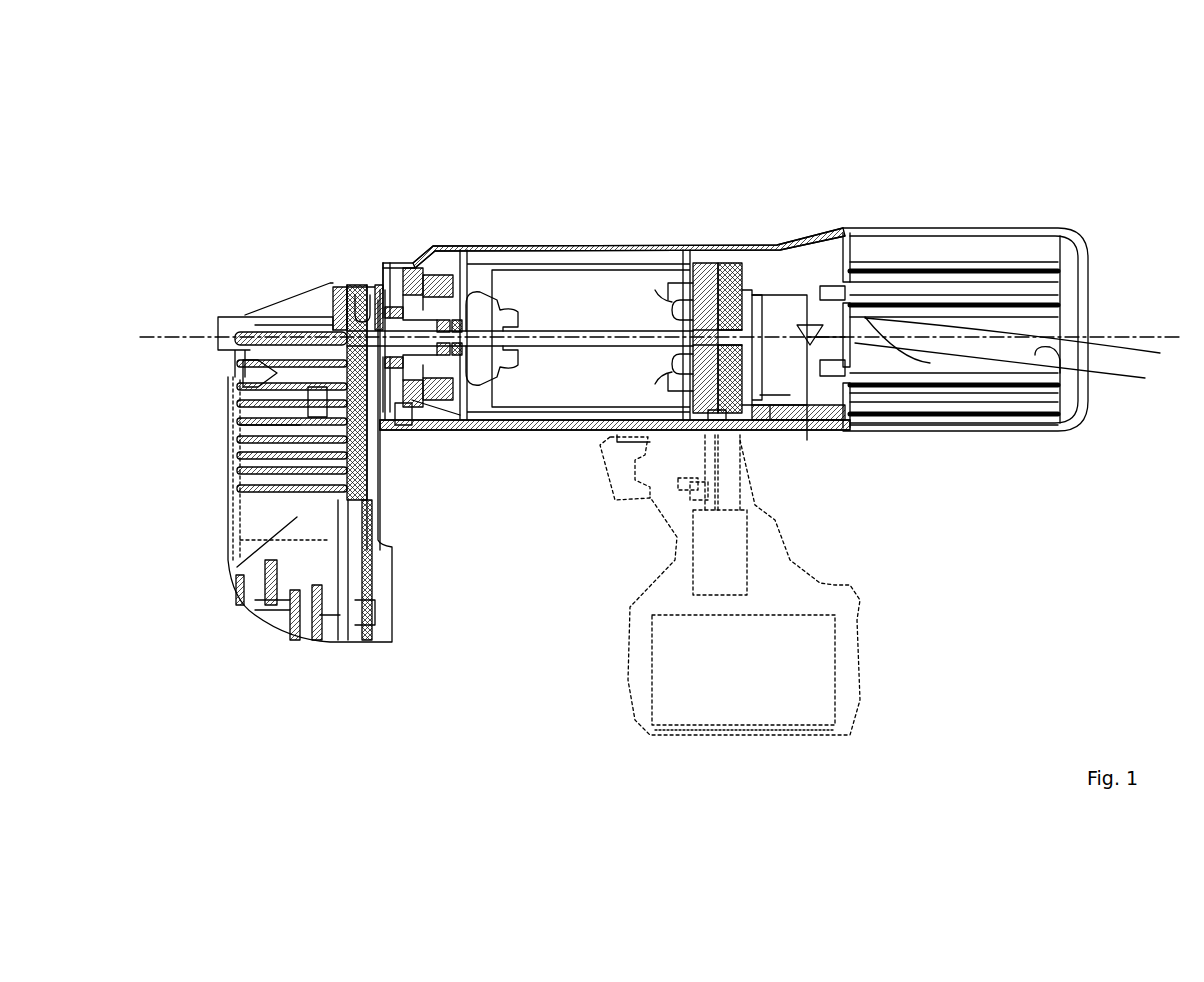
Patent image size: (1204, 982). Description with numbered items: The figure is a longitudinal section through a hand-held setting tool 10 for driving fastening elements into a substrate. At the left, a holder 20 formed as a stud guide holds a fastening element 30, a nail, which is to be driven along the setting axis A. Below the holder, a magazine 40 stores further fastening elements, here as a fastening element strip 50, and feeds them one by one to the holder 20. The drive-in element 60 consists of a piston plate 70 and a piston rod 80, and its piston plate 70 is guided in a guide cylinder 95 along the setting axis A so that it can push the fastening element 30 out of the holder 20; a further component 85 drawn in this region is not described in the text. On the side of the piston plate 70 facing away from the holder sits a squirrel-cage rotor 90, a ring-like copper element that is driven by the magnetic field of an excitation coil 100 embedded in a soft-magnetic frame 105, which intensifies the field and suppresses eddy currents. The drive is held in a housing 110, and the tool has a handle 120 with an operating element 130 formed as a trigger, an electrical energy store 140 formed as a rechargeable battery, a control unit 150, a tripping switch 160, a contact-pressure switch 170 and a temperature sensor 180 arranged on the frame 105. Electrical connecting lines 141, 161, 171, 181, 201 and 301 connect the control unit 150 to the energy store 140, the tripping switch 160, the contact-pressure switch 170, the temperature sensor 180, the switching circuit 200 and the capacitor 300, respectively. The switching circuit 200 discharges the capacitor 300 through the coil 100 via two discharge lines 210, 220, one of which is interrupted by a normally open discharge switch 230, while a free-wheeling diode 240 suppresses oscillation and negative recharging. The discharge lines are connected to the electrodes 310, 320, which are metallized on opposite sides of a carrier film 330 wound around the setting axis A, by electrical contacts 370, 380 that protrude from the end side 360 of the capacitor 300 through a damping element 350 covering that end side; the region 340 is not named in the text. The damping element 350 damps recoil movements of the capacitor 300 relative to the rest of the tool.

The setting tool 10 is at (322, 152).
The holder 20 is at (232, 300).
The fastening element 30 is at (290, 320).
The magazine 40 is at (237, 567).
The fastening element strip 50 is at (360, 500).
The drive-in element 60 is at (612, 148).
The piston plate 70 is at (655, 300).
The piston rod 80 is at (580, 348).
The bearing flange 85 is at (480, 300).
The squirrel-cage rotor 90 is at (702, 340).
The guide cylinder 95 is at (530, 262).
The excitation coil 100 is at (735, 300).
The soft-magnetic frame 105 is at (770, 300).
The housing 110 is at (1057, 240).
The handle 120 is at (680, 540).
The operating element 130 is at (627, 450).
The electrical energy store 140 is at (683, 687).
The electrical connecting line 141 is at (722, 598).
The control unit 150 is at (713, 550).
The tripping switch 160 is at (700, 480).
The electrical connecting line 161 is at (700, 497).
The contact-pressure switch 170 is at (405, 428).
The electrical connecting line 171 is at (437, 427).
The temperature sensor 180 is at (738, 423).
The electrical connecting line 181 is at (727, 462).
The switching circuit 200 is at (812, 270).
The electrical connecting line 201 is at (772, 395).
The discharge line 210 is at (855, 393).
The discharge line 220 is at (1031, 342).
The discharge switch 230 is at (858, 410).
The free-wheeling diode 240 is at (921, 346).
The capacitor 300 is at (1000, 250).
The electrical connecting line 301 is at (880, 387).
The electrode 310 is at (1047, 295).
The electrode 320 is at (1024, 366).
The carrier film 330 is at (1060, 287).
The stator winding end 340 is at (1010, 397).
The damping element 350 is at (840, 392).
The end side 360 is at (832, 290).
The electrical contact 370 is at (878, 318).
The electrical contact 380 is at (905, 395).
The setting axis A is at (1122, 337).